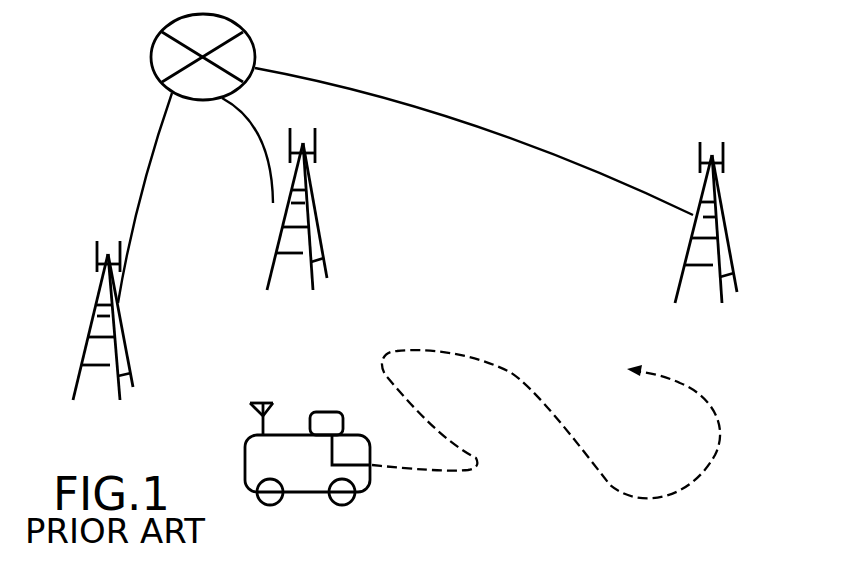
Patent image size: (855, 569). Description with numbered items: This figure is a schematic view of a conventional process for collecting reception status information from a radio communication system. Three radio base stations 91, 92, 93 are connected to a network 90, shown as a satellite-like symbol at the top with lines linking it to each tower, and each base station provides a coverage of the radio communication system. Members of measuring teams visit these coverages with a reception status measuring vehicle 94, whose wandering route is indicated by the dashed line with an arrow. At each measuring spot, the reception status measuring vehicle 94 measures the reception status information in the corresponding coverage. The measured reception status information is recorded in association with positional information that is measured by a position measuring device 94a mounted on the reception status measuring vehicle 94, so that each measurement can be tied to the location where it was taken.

The network 90 is at (255, 44).
The radio base station 91 is at (94, 311).
The radio base station 92 is at (318, 153).
The radio base station 93 is at (720, 195).
The reception status measuring vehicle 94 is at (307, 497).
The position measuring device 94a is at (323, 408).